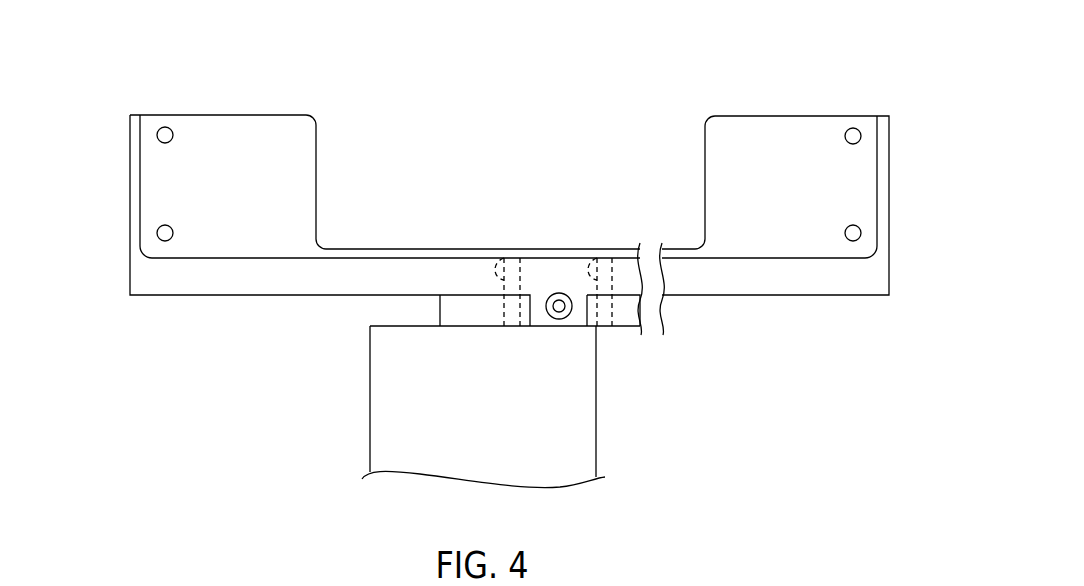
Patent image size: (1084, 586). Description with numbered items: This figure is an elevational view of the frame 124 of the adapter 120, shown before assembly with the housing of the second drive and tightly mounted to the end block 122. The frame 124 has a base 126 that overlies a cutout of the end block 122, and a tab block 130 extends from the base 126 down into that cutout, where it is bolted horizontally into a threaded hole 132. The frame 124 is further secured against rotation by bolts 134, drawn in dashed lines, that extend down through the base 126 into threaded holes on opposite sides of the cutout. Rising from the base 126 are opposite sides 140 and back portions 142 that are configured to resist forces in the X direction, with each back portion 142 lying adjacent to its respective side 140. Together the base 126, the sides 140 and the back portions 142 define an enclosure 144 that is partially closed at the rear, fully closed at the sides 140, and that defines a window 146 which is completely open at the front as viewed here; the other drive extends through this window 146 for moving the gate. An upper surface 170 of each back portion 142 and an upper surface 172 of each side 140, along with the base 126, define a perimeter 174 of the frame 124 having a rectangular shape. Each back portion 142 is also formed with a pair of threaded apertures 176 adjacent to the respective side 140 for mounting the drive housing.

The adapter 120 is at (797, 86).
The end block 122 is at (450, 313).
The frame 124 is at (875, 303).
The base 126 is at (682, 283).
The tab block 130 is at (540, 320).
The threaded hole 132 is at (559, 300).
The bolts 134 is at (500, 256).
The sides 140 is at (134, 129).
The back portions 142 is at (303, 125).
The enclosure 144 is at (198, 254).
The window 146 is at (301, 214).
The upper surface of back portion 170 is at (242, 115).
The upper surface of side 172 is at (133, 113).
The perimeter 174 is at (285, 105).
The apertures 176 is at (174, 137).